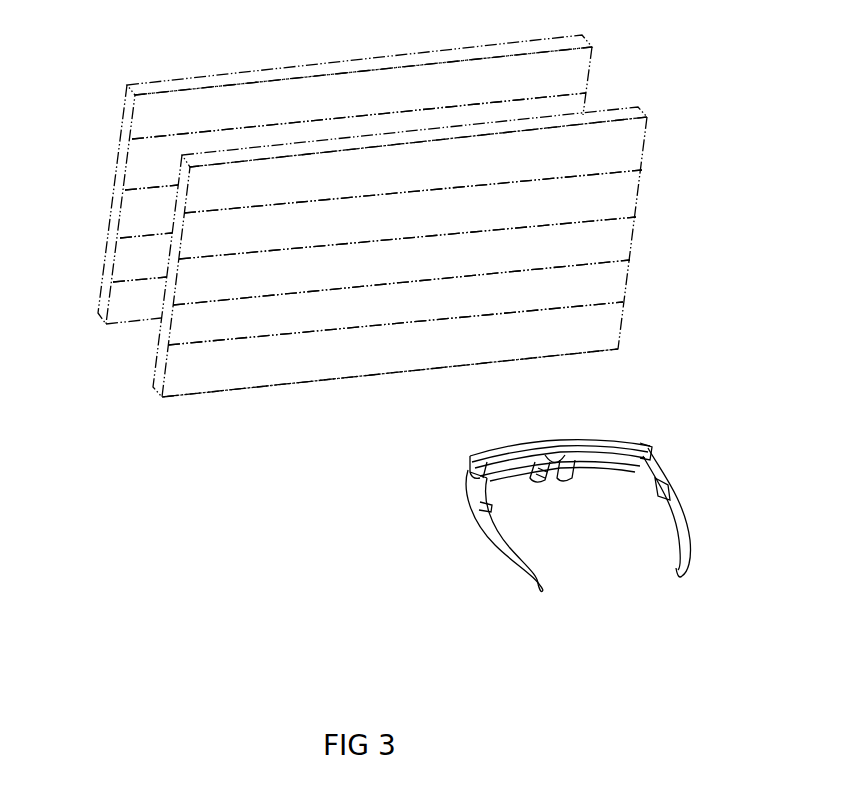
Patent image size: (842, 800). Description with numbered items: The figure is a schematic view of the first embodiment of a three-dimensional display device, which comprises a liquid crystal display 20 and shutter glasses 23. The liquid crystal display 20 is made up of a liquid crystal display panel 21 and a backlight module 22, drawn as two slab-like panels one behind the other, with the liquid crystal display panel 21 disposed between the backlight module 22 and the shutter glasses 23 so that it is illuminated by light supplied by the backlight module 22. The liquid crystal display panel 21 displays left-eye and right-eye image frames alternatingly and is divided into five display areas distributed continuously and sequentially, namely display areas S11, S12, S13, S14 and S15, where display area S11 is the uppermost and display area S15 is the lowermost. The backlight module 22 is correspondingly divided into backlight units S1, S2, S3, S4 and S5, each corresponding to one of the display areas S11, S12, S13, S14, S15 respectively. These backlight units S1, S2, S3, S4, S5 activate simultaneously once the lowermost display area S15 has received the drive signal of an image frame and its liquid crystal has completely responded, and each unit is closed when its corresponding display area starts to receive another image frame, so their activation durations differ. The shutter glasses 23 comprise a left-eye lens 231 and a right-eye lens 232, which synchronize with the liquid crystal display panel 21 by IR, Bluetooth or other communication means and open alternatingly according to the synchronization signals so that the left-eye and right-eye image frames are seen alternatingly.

The liquid crystal display 20 is at (714, 13).
The liquid crystal display panel 21 is at (647, 117).
The backlight module 22 is at (592, 47).
The shutter glasses 23 is at (647, 444).
The left-eye lens 231 is at (512, 452).
The right-eye lens 232 is at (583, 440).
The backlight unit S1 is at (150, 127).
The backlight unit S2 is at (137, 170).
The backlight unit S3 is at (135, 215).
The backlight unit S4 is at (128, 272).
The backlight unit S5 is at (120, 322).
The display area S11 is at (638, 147).
The display area S12 is at (630, 182).
The display area S13 is at (630, 227).
The display area S14 is at (617, 293).
The display area S15 is at (612, 335).